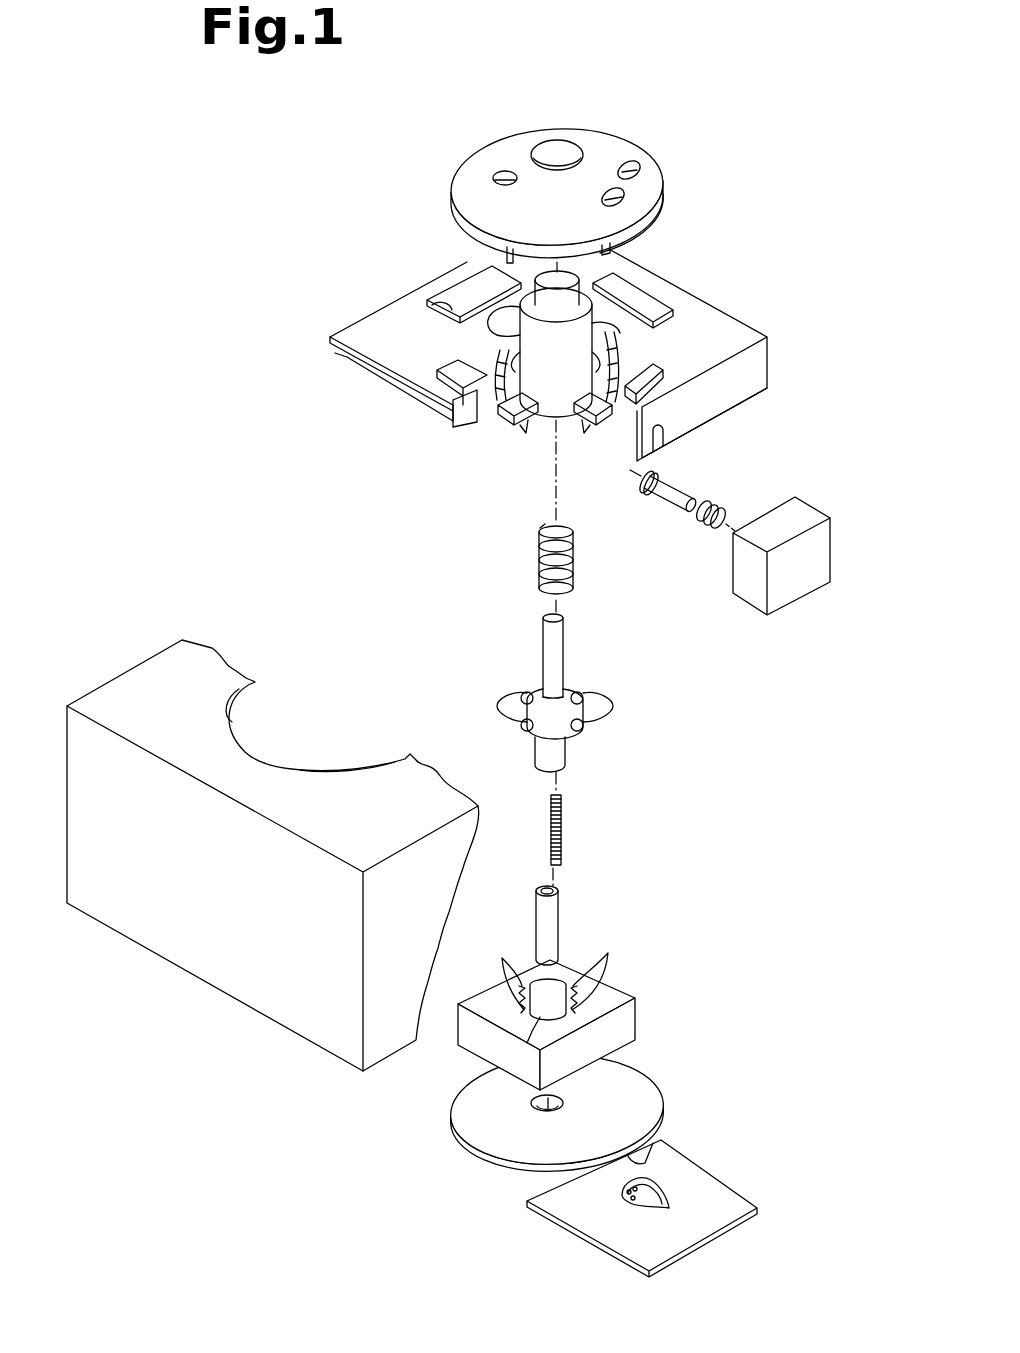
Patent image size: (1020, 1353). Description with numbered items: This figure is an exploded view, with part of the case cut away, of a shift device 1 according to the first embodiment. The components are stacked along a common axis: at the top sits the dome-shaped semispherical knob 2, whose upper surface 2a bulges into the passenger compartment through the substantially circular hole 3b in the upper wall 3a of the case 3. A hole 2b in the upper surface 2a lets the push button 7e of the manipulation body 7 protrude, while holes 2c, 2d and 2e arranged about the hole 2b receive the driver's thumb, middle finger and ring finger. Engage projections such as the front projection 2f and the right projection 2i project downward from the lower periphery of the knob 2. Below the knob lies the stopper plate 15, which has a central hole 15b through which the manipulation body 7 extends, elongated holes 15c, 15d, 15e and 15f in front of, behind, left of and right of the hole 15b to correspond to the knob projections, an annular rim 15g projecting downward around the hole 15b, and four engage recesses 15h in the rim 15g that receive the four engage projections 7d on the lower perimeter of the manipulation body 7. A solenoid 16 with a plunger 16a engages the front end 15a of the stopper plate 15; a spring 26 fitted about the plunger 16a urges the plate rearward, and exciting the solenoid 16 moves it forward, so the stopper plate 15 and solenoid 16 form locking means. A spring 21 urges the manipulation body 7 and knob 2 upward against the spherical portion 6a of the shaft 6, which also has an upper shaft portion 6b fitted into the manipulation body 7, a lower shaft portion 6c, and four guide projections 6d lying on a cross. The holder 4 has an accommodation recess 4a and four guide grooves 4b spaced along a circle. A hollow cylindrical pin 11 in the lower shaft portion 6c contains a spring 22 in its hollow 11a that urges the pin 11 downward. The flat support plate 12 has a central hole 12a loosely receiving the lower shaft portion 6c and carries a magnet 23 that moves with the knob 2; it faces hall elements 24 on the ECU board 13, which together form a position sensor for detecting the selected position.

The shift device 1 is at (762, 191).
The semispherical knob 2 is at (439, 185).
The upper surface 2a is at (662, 172).
The hole 2b is at (566, 148).
The hole 2c is at (505, 173).
The hole 2d is at (617, 198).
The hole 2e is at (632, 165).
The engage projection 2f is at (640, 239).
The engage projection 2i is at (466, 246).
The case 3 is at (273, 855).
The upper wall 3a is at (387, 777).
The hole 3b is at (331, 768).
The holder 4 is at (569, 1005).
The accommodation recess 4a is at (527, 1043).
The guide grooves 4b is at (522, 992).
The shaft 6 is at (548, 695).
The spherical portion 6a is at (566, 697).
The upper shaft portion 6b is at (565, 636).
The lower shaft portion 6c is at (560, 757).
The guide projections 6d is at (495, 707).
The manipulation body 7 is at (562, 428).
The engage projections 7d is at (518, 424).
The push button 7e is at (562, 270).
The pin 11 is at (559, 904).
The hollow 11a is at (540, 889).
The support plate 12 is at (576, 1103).
The hole 12a is at (531, 1104).
The ECU board 13 is at (750, 1189).
The stopper plate 15 is at (740, 306).
The front end 15a is at (764, 357).
The hole 15b is at (600, 334).
The elongated hole 15c is at (648, 378).
The elongated hole 15d is at (432, 302).
The elongated hole 15e is at (645, 297).
The elongated hole 15f is at (445, 420).
The rim 15g is at (490, 328).
The engage recesses 15h is at (592, 360).
The solenoid 16 is at (787, 490).
The plunger 16a is at (662, 502).
The spring 21 is at (573, 570).
The spring 22 is at (562, 817).
The magnet 23 is at (655, 1150).
The hall elements 24 is at (661, 1209).
The spring 26 is at (718, 503).